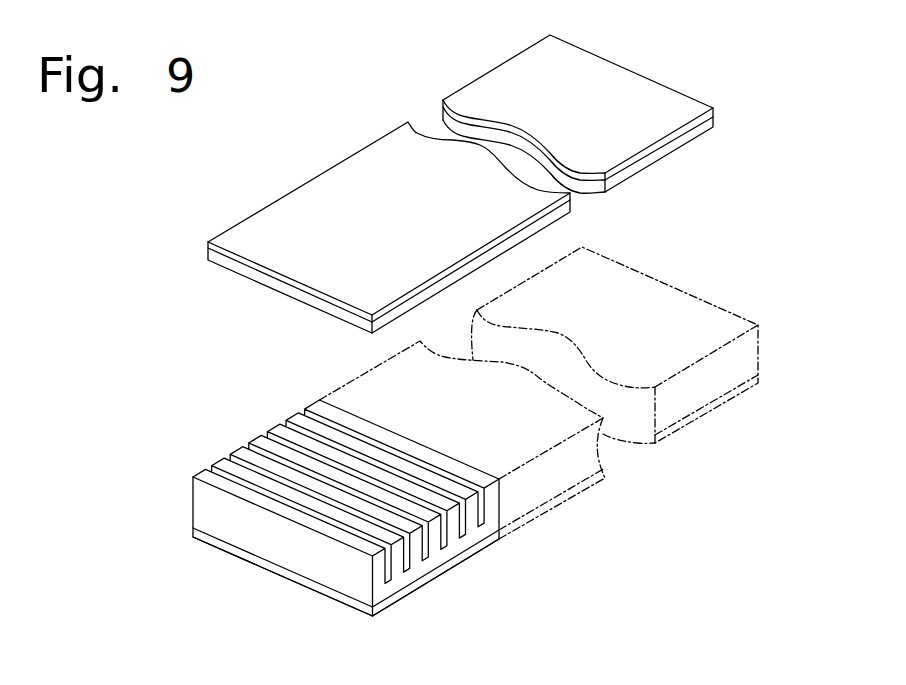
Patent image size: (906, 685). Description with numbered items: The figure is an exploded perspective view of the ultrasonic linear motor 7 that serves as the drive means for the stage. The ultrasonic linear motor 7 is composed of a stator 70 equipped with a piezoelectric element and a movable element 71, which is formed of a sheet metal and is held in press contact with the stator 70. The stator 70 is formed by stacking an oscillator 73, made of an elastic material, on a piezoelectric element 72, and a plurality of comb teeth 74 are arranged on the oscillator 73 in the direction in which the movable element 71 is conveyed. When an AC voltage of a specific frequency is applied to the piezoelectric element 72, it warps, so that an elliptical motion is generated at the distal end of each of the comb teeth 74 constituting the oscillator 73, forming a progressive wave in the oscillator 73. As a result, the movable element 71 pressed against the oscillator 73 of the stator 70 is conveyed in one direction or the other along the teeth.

The ultrasonic linear motor 7 is at (138, 295).
The stator 70 is at (235, 433).
The movable element 71 is at (253, 304).
The piezoelectric element 72 is at (430, 575).
The oscillator 73 is at (312, 557).
The comb teeth 74 is at (262, 440).